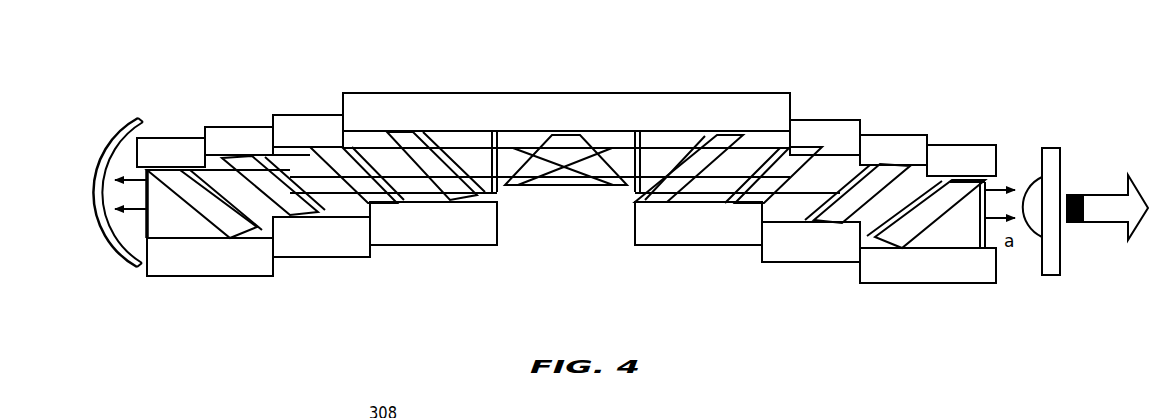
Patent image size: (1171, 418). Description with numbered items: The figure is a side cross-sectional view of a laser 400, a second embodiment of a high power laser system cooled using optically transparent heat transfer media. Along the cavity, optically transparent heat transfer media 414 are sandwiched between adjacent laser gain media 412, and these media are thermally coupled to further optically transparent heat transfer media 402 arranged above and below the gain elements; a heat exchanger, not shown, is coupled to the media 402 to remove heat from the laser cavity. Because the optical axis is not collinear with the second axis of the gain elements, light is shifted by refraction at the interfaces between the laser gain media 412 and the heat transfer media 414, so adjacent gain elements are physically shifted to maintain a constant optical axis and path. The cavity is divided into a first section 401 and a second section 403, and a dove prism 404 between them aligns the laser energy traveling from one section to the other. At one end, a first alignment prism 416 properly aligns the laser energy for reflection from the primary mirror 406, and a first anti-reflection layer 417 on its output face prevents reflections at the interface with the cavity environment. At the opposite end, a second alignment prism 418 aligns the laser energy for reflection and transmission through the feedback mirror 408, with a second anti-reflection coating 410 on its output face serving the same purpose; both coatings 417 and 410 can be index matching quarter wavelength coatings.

The laser 400 is at (606, 68).
The first section 401 is at (775, 85).
The optically transparent heat transfer media 402 is at (172, 150).
The second section 403 is at (357, 80).
The dove prism 404 is at (568, 177).
The primary mirror 406 is at (107, 252).
The feedback mirror 408 is at (1045, 148).
The second anti-reflection coating 410 is at (997, 250).
The laser gain media 412 is at (240, 190).
The optically transparent heat transfer media 414 is at (181, 183).
The first alignment prism 416 is at (180, 245).
The first anti-reflection layer 417 is at (145, 222).
The second alignment prism 418 is at (952, 255).